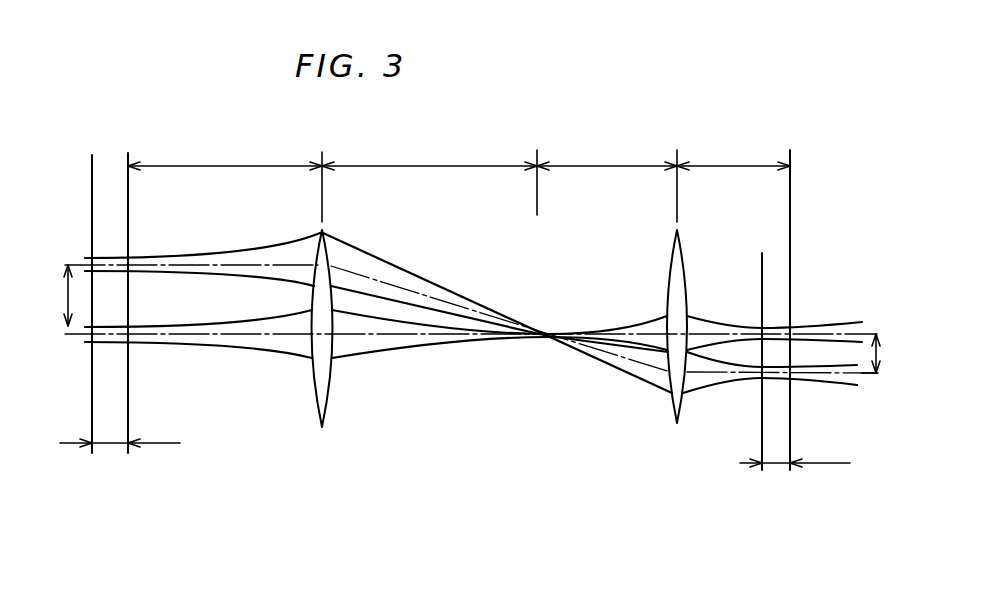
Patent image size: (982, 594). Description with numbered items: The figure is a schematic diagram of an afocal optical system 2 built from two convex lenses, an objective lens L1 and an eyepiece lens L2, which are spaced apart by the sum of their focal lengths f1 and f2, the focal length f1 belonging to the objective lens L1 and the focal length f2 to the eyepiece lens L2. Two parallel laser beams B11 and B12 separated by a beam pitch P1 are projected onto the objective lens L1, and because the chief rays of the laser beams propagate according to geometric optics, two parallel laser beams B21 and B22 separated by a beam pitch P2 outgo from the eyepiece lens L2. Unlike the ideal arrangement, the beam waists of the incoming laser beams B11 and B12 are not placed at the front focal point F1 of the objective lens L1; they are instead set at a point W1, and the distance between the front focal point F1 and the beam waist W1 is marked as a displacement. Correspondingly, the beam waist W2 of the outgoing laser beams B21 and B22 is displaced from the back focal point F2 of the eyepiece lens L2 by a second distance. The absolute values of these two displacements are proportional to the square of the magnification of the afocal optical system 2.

The afocal optical system 2 is at (502, 390).
The objective lens L1 is at (322, 421).
The eyepiece lens L2 is at (678, 350).
The laser beam B11 is at (190, 337).
The laser beam B12 is at (178, 256).
The laser beam B21 is at (803, 330).
The laser beam B22 is at (824, 376).
The beam waist W1 is at (85, 321).
The beam waist W2 is at (743, 382).
The front focal point F1 is at (130, 320).
The back focal point F2 is at (804, 330).
The beam pitch P1 is at (56, 295).
The beam pitch P2 is at (883, 353).
The focal length f1 is at (332, 154).
The focal length f2 is at (663, 154).